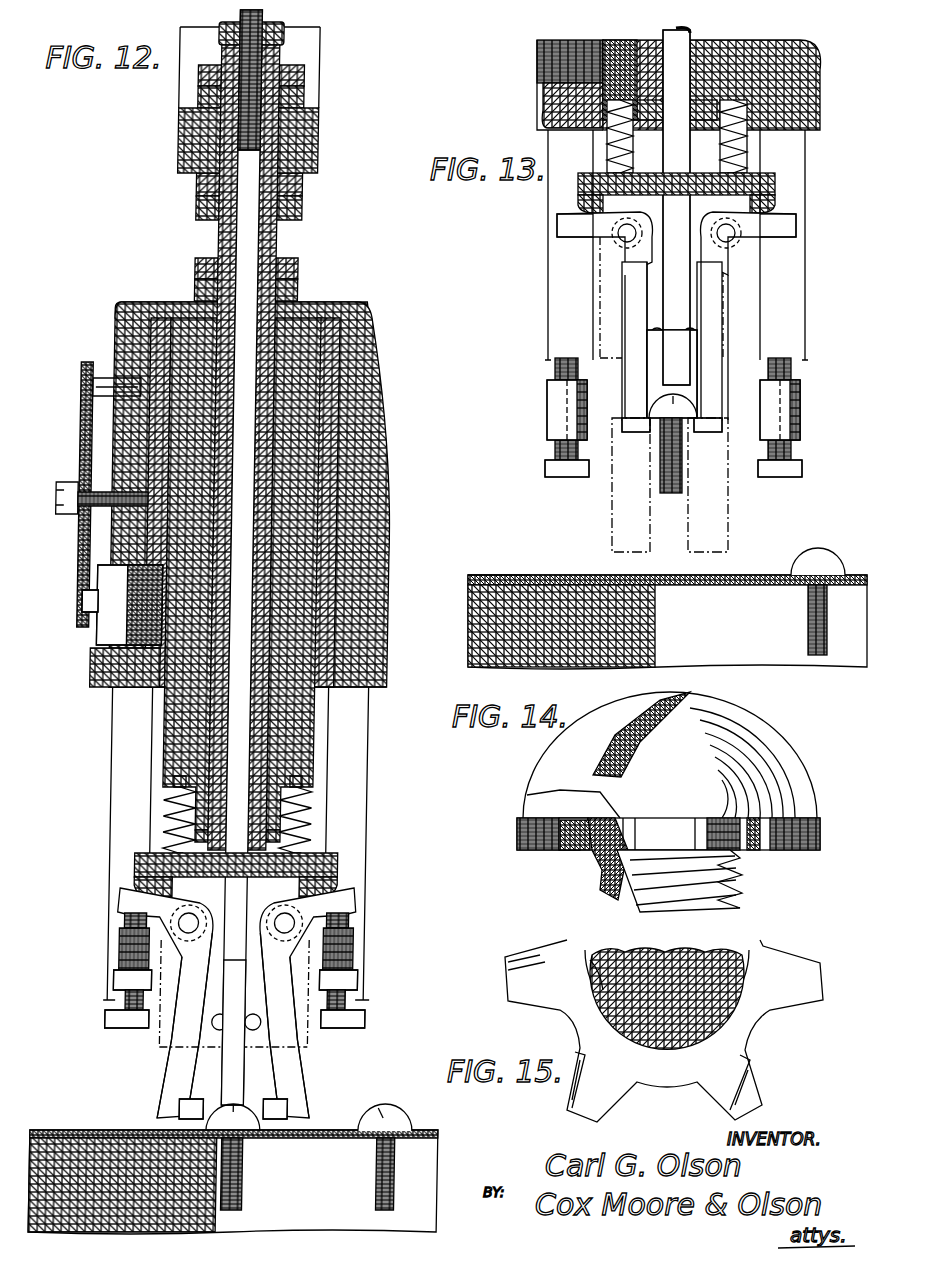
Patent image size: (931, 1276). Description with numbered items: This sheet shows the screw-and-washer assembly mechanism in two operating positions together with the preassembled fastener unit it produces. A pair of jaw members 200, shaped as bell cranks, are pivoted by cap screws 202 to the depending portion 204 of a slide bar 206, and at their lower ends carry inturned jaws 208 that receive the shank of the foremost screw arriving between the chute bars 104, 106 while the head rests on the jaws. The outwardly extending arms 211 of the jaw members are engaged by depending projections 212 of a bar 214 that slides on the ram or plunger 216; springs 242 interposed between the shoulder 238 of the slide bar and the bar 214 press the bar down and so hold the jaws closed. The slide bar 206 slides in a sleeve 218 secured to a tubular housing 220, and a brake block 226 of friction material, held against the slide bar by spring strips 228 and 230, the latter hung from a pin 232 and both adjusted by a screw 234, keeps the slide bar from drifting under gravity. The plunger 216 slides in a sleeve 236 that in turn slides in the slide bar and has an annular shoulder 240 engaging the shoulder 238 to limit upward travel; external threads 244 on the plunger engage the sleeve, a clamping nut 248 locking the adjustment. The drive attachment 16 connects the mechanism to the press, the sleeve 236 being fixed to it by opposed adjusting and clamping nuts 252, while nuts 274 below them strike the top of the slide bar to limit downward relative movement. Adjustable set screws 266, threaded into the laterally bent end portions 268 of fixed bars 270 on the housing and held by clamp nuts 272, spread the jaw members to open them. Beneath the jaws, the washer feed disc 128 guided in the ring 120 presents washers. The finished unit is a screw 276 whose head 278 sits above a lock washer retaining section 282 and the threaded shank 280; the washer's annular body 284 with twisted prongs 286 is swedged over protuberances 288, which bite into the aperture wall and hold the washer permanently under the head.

In FIG. 12, the drive attachment 16 is at (168, 157).
In FIG. 13, the bar 104 is at (612, 528).
In FIG. 13, the bar 106 is at (728, 528).
In FIG. 12, the ring 120 is at (62, 1145).
In FIG. 13, the ring 120 is at (480, 608).
In FIG. 13, the rotary washer feed plate 128 is at (470, 575).
In FIG. 12, the jaw member 200 is at (180, 1063).
In FIG. 13, the jaw member 200 is at (625, 338).
In FIG. 12, the cap screw 202 is at (200, 923).
In FIG. 13, the cap screw 202 is at (625, 235).
In FIG. 12, the depending portion 204 is at (170, 1020).
In FIG. 13, the depending portion 204 is at (661, 297).
In FIG. 12, the slide bar 206 is at (275, 60).
In FIG. 13, the slide bar 206 is at (720, 50).
In FIG. 12, the inturned jaw 208 is at (196, 1105).
In FIG. 13, the inturned jaw 208 is at (636, 432).
In FIG. 13, the outwardly extending arm 211 is at (565, 226).
In FIG. 12, the depending projection 212 is at (150, 886).
In FIG. 13, the depending projection 212 is at (580, 210).
In FIG. 12, the bar 214 is at (340, 868).
In FIG. 13, the bar 214 is at (772, 190).
In FIG. 12, the ram or plunger 216 is at (240, 742).
In FIG. 13, the ram or plunger 216 is at (680, 293).
In FIG. 12, the sleeve 218 is at (160, 302).
In FIG. 12, the tubular housing 220 is at (380, 440).
In FIG. 13, the tubular housing 220 is at (790, 90).
In FIG. 12, the brake member or block 226 is at (110, 650).
In FIG. 13, the brake member or block 226 is at (545, 58).
In FIG. 12, the spring strip 228 is at (100, 545).
In FIG. 12, the spring strip 230 is at (93, 600).
In FIG. 12, the pin 232 is at (108, 380).
In FIG. 12, the screw 234 is at (72, 482).
In FIG. 12, the sleeve 236 is at (225, 720).
In FIG. 13, the sleeve 236 is at (660, 38).
In FIG. 12, the shoulder 238 is at (308, 790).
In FIG. 12, the annular shoulder 240 is at (190, 810).
In FIG. 13, the annular shoulder 240 is at (600, 95).
In FIG. 12, the spring 242 is at (185, 840).
In FIG. 13, the spring 242 is at (745, 150).
In FIG. 12, the external threads 244 is at (318, 125).
In FIG. 12, the clamping nut 248 is at (282, 38).
In FIG. 12, the adjusting and clamping nuts 252 is at (303, 205).
In FIG. 12, the adjustable set screw 266 is at (130, 1005).
In FIG. 13, the adjustable set screw 266 is at (800, 458).
In FIG. 12, the laterally bent end portion 268 is at (135, 945).
In FIG. 13, the laterally bent end portion 268 is at (547, 392).
In FIG. 12, the fixed bar 270 is at (160, 785).
In FIG. 13, the fixed bar 270 is at (570, 296).
In FIG. 12, the clamp nut 272 is at (128, 980).
In FIG. 13, the clamp nut 272 is at (548, 425).
In FIG. 12, the adjusting and clamping nuts 274 is at (300, 282).
In FIG. 12, the screw 276 is at (433, 1118).
In FIG. 13, the screw 276 is at (818, 601).
In FIG. 14, the screw 276 is at (790, 723).
In FIG. 14, the screw head 278 is at (777, 753).
In FIG. 12, the threaded shank portion 280 is at (415, 1165).
In FIG. 14, the threaded shank portion 280 is at (745, 888).
In FIG. 14, the lock washer retaining section 282 is at (745, 850).
In FIG. 15, the lock washer retaining section 282 is at (740, 1022).
In FIG. 14, the annular body 284 is at (578, 850).
In FIG. 14, the prong 286 is at (525, 848).
In FIG. 15, the prong 286 is at (762, 1092).
In FIG. 14, the lock washer engaging protuberance 288 is at (595, 848).
In FIG. 15, the lock washer engaging protuberance 288 is at (575, 1010).